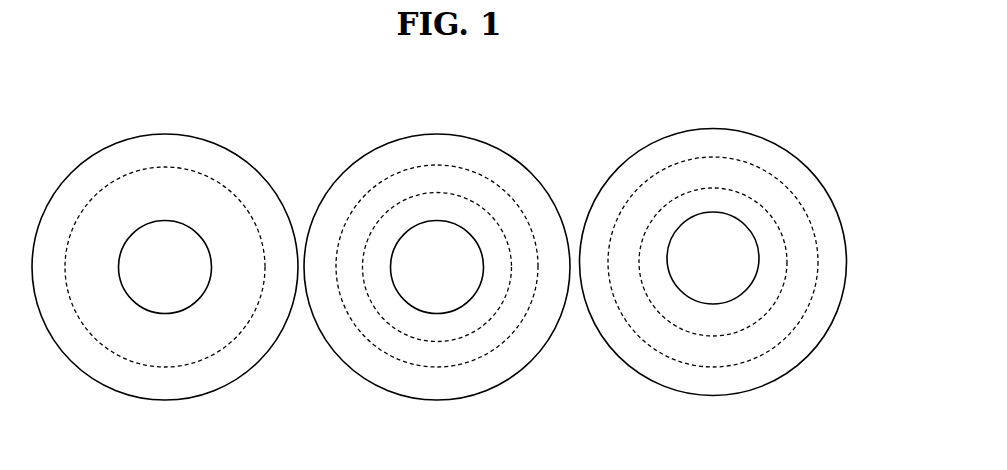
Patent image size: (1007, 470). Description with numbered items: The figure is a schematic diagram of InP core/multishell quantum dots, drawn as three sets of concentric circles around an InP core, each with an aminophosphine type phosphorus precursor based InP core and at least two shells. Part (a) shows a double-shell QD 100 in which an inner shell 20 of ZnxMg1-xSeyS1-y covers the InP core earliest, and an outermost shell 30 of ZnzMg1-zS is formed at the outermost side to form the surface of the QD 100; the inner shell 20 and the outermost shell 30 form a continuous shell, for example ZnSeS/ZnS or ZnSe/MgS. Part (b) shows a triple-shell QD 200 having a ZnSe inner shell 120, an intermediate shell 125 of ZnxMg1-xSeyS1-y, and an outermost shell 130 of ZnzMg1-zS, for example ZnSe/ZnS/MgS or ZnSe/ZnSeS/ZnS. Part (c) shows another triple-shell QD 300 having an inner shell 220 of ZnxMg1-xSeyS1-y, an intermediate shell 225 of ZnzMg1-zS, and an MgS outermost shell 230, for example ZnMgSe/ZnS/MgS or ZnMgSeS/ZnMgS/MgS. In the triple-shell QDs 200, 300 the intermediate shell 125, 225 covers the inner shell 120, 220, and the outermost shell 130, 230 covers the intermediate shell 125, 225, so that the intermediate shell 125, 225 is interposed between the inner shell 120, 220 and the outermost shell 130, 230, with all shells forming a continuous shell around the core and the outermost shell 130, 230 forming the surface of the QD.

The quantum dot 100 is at (118, 114).
The quantum dot 200 is at (395, 114).
The quantum dot 300 is at (662, 114).
The inner shell 20 is at (222, 318).
The outermost shell 30 is at (254, 340).
The inner shell 120 is at (478, 317).
The intermediate shell 125 is at (512, 318).
The outermost shell 130 is at (547, 317).
The inner shell 220 is at (763, 302).
The intermediate shell 225 is at (787, 315).
The outermost shell 230 is at (822, 312).